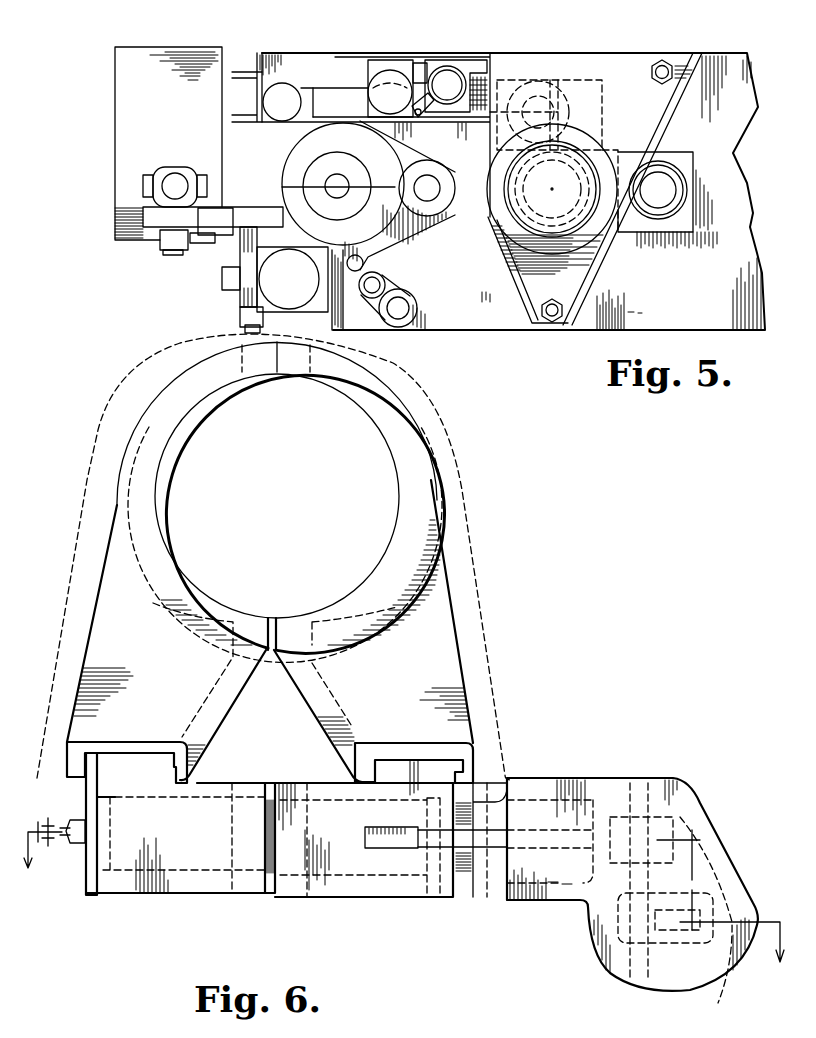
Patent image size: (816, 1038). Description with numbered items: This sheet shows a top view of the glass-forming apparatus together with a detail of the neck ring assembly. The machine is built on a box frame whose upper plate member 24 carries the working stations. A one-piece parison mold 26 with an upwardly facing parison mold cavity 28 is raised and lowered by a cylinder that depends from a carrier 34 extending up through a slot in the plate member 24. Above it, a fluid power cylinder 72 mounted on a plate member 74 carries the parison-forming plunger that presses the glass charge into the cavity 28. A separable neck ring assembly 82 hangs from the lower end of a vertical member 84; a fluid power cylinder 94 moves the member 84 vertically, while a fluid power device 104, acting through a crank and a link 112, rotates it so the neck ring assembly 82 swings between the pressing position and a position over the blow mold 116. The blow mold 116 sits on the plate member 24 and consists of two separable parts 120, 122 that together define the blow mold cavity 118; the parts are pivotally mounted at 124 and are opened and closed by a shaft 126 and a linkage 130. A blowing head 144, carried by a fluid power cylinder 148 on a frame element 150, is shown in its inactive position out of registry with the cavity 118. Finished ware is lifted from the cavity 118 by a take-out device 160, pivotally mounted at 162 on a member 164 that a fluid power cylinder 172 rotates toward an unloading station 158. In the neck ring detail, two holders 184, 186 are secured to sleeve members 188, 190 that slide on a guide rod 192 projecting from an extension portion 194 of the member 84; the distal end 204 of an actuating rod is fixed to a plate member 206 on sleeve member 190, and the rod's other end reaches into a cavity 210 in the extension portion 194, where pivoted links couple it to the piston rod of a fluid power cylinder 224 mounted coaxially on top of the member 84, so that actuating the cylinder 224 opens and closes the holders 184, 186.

In FIG. 5, the upper plate member 24 is at (700, 285).
In FIG. 5, the parison mold 26 is at (667, 163).
In FIG. 5, the parison mold cavity 28 is at (668, 193).
In FIG. 5, the carrier 34 is at (635, 223).
In FIG. 5, the fluid power cylinder 72 is at (523, 220).
In FIG. 5, the plate member 74 is at (653, 116).
In FIG. 5, the neck ring assembly 82 is at (593, 118).
In FIG. 6, the neck ring assembly 82 is at (474, 483).
In FIG. 6, the vertical member 84 is at (718, 815).
In FIG. 5, the fluid power cylinder 94 is at (384, 74).
In FIG. 5, the fluid power device 104 is at (540, 92).
In FIG. 5, the link 112 is at (481, 122).
In FIG. 5, the blow mold 116 is at (413, 237).
In FIG. 5, the blow mold cavity 118 is at (300, 188).
In FIG. 5, the blow mold part 120 is at (368, 222).
In FIG. 5, the blow mold part 122 is at (300, 155).
In FIG. 5, the pivot 124 is at (433, 190).
In FIG. 5, the shaft 126 is at (405, 312).
In FIG. 5, the linkage 130 is at (358, 273).
In FIG. 5, the blowing head 144 is at (345, 102).
In FIG. 5, the fluid power cylinder 148 is at (296, 110).
In FIG. 5, the frame element 150 is at (243, 72).
In FIG. 5, the unloading station 158 is at (135, 97).
In FIG. 5, the take-out device 160 is at (143, 185).
In FIG. 5, the pivot 162 is at (168, 255).
In FIG. 5, the member 164 is at (212, 233).
In FIG. 5, the fluid power cylinder 172 is at (297, 287).
In FIG. 6, the neck ring holder 184 is at (400, 452).
In FIG. 6, the neck ring holder 186 is at (143, 465).
In FIG. 6, the sleeve member 188 is at (323, 890).
In FIG. 6, the sleeve member 190 is at (164, 896).
In FIG. 6, the guide rod 192 is at (462, 864).
In FIG. 6, the extension portion 194 is at (663, 983).
In FIG. 6, the distal end 204 is at (73, 820).
In FIG. 6, the plate member 206 is at (90, 897).
In FIG. 6, the cavity 210 is at (712, 921).
In FIG. 5, the fluid power cylinder 224 is at (446, 73).